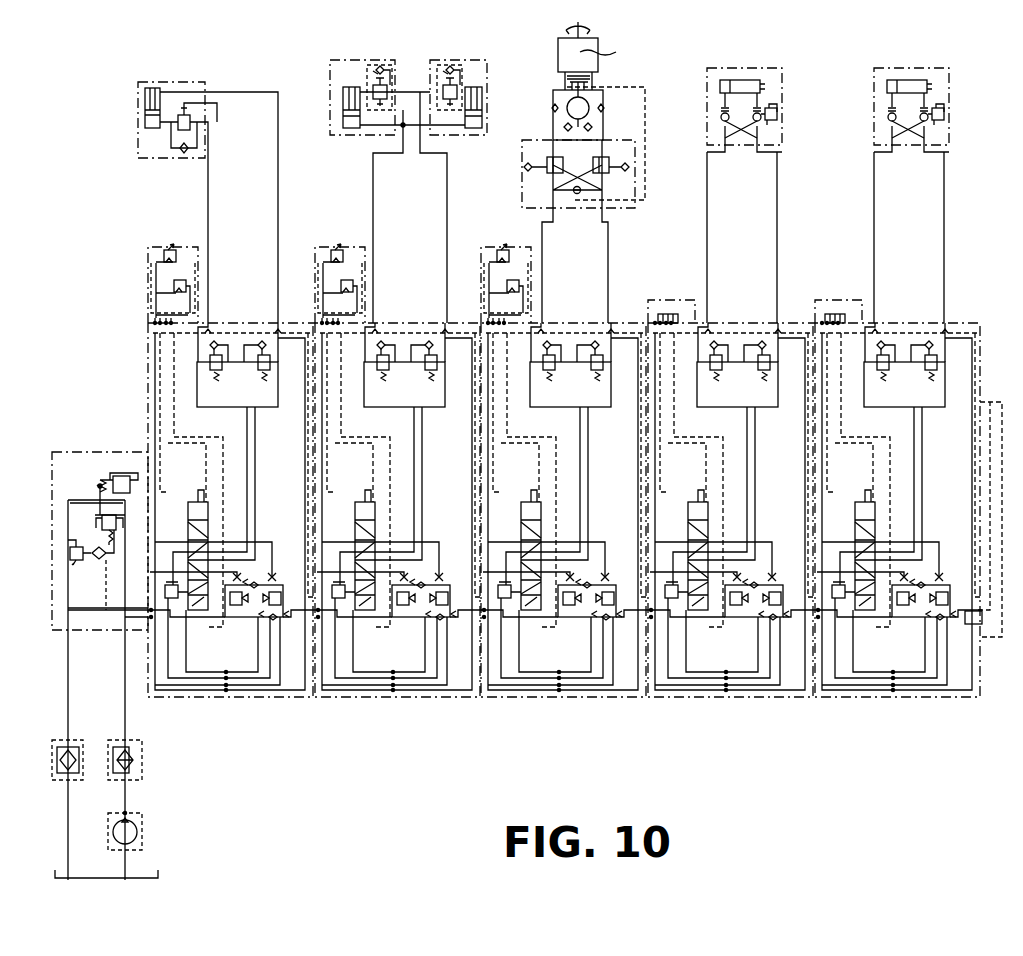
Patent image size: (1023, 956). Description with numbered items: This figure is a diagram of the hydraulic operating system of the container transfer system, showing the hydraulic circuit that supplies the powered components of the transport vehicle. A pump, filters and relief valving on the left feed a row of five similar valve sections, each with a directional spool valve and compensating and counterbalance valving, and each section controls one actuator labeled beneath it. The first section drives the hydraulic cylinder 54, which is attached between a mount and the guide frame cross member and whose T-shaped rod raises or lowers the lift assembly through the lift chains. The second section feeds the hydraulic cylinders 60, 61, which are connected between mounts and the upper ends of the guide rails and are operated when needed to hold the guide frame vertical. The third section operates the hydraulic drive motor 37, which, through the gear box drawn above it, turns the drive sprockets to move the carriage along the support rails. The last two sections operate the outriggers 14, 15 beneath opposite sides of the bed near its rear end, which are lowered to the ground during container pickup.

The hydraulic cylinder 54 is at (227, 435).
The hydraulic cylinder 60 is at (401, 424).
The hydraulic cylinder 61 is at (408, 424).
The hydraulic drive motor 37 is at (572, 405).
The outrigger 14 is at (732, 417).
The outrigger 15 is at (899, 417).